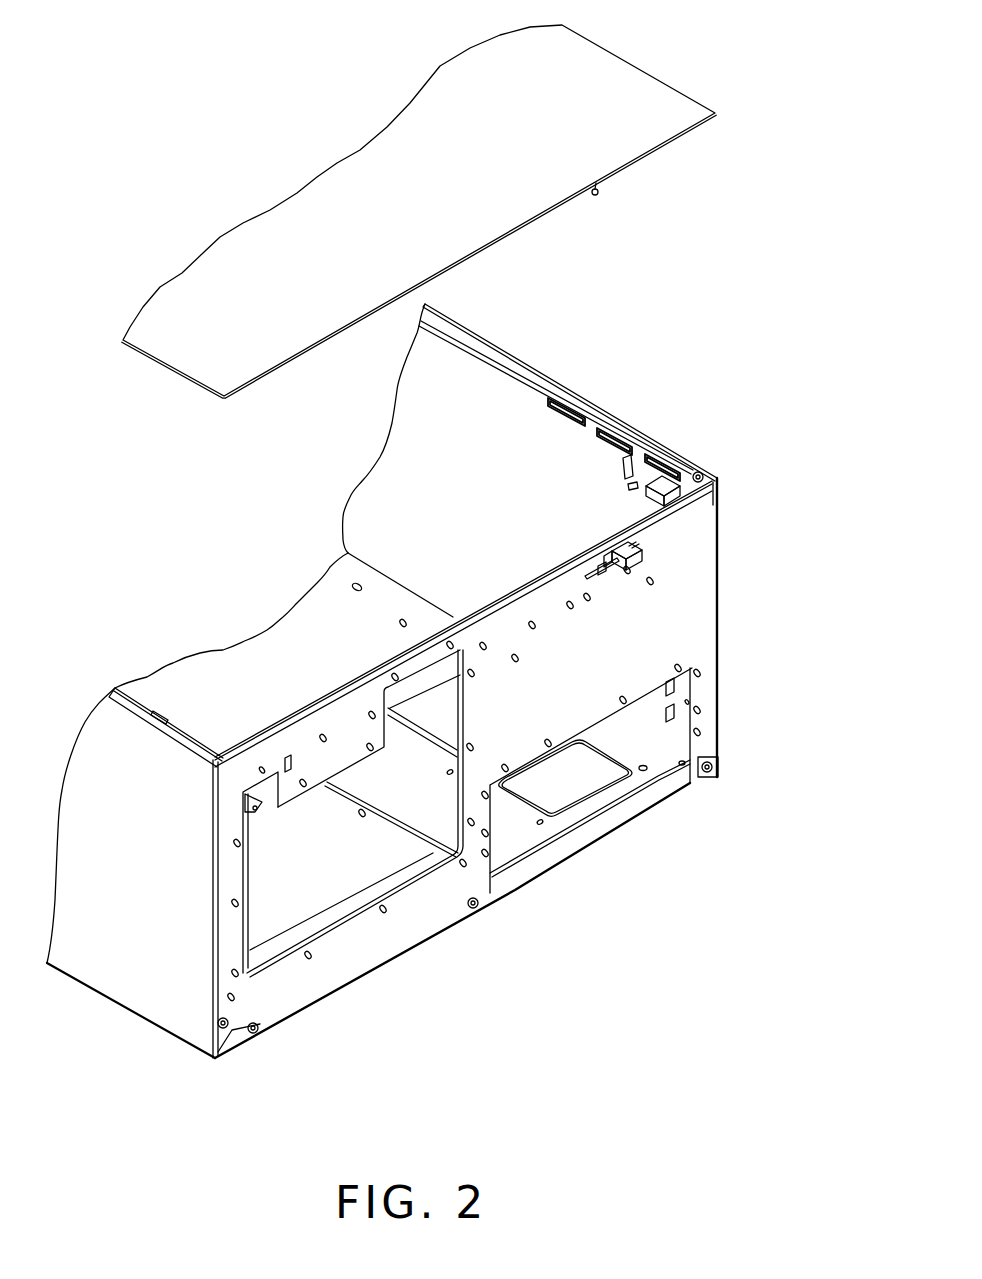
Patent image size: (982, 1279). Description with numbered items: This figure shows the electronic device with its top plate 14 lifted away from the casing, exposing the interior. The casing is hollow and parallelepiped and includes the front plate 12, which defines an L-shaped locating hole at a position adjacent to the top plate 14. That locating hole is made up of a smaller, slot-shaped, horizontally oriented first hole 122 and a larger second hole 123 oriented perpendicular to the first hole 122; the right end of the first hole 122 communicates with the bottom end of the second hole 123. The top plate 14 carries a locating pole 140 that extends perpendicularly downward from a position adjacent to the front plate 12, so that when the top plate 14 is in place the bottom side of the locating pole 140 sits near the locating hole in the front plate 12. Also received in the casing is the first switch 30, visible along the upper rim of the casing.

The top plate 14 is at (623, 92).
The locating pole 140 is at (599, 194).
The front plate 12 is at (696, 555).
The first switch 30 is at (670, 486).
The second hole 123 is at (612, 563).
The first hole 122 is at (602, 573).